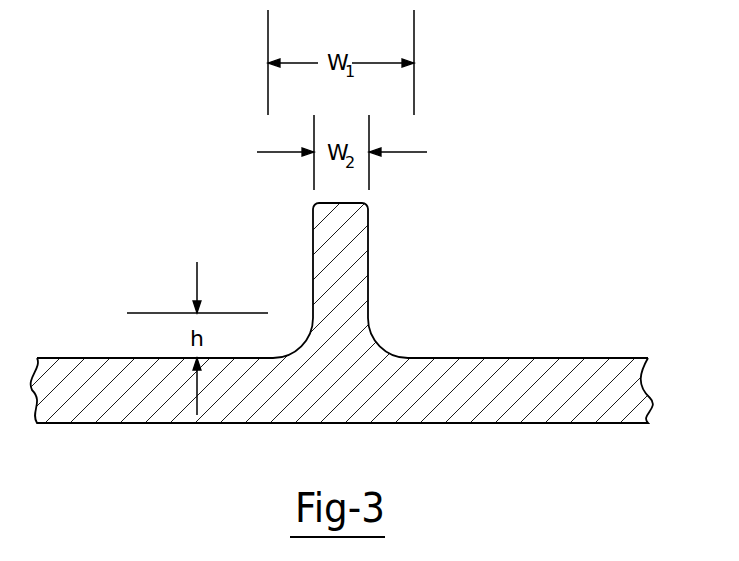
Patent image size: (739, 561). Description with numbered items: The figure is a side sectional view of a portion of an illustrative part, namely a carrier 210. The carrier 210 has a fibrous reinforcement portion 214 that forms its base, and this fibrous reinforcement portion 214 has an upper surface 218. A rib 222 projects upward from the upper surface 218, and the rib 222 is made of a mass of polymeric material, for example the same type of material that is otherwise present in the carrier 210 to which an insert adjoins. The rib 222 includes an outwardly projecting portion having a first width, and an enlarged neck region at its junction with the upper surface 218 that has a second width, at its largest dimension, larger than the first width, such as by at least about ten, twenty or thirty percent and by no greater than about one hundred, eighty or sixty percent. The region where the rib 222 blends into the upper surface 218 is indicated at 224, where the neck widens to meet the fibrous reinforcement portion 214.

The carrier 210 is at (369, 355).
The fibrous reinforcement portion 214 is at (547, 388).
The upper surface 218 is at (63, 358).
The rib 222 is at (368, 247).
The fillet 224 is at (377, 343).